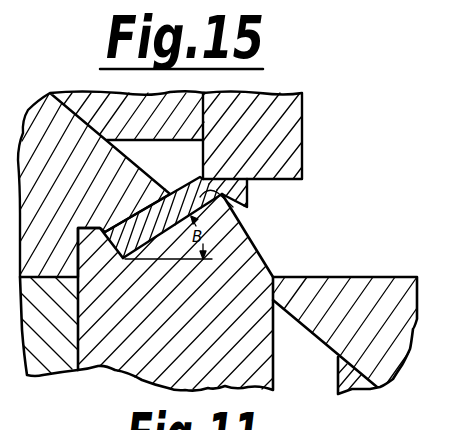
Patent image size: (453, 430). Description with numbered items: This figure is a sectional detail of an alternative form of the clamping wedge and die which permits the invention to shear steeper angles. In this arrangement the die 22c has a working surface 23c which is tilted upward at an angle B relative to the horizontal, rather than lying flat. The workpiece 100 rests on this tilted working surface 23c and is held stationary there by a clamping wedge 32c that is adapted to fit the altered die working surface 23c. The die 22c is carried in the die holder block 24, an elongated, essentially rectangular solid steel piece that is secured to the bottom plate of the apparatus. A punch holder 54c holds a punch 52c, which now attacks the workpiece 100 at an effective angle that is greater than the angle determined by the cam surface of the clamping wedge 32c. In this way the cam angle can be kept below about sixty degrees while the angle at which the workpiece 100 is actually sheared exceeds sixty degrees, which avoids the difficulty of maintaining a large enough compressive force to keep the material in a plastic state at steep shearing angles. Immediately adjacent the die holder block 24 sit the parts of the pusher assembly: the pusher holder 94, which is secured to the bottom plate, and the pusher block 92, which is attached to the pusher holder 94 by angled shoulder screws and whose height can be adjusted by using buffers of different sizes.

The die 22c is at (192, 332).
The working surface 23c is at (233, 208).
The die holder block 24 is at (58, 331).
The clamping wedge 32c is at (74, 200).
The punch 52c is at (266, 150).
The punch holder 54c is at (161, 128).
The pusher block 92 is at (365, 324).
The pusher holder 94 is at (352, 380).
The workpiece 100 is at (192, 187).